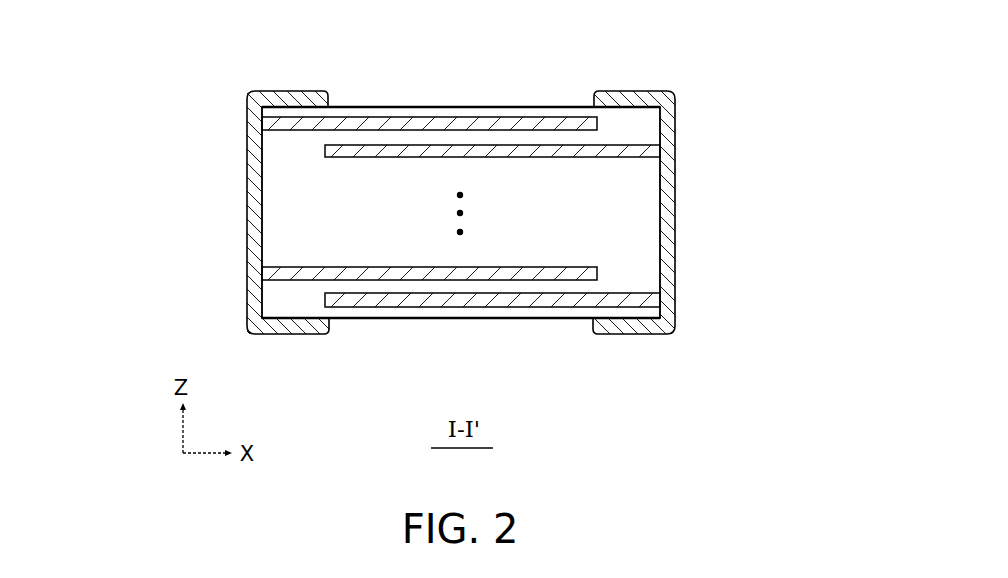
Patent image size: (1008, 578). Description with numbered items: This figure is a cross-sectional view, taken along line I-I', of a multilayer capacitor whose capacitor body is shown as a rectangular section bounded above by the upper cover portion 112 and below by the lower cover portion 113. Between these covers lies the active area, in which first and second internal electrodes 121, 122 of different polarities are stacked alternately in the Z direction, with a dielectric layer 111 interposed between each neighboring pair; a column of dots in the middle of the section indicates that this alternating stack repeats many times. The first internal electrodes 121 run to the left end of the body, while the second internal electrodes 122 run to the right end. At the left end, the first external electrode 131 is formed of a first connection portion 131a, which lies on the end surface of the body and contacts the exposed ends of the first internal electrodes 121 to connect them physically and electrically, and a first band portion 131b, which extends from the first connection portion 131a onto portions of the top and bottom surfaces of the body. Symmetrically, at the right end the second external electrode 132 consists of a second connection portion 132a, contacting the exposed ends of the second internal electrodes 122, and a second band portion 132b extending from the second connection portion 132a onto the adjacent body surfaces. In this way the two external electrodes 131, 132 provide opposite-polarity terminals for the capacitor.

The dielectric layer 111 is at (528, 288).
The upper cover portion 112 is at (467, 111).
The lower cover portion 113 is at (468, 314).
The first internal electrode 121 is at (306, 127).
The second internal electrode 122 is at (572, 301).
The first external electrode 131 is at (289, 212).
The first connection portion 131a is at (247, 231).
The first band portion 131b is at (292, 327).
The second external electrode 132 is at (635, 212).
The second connection portion 132a is at (676, 231).
The second band portion 132b is at (630, 327).